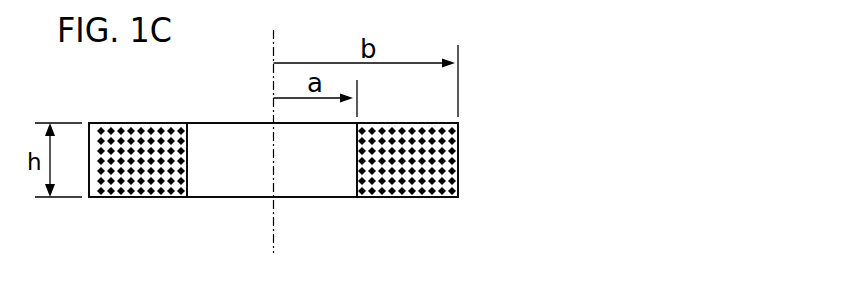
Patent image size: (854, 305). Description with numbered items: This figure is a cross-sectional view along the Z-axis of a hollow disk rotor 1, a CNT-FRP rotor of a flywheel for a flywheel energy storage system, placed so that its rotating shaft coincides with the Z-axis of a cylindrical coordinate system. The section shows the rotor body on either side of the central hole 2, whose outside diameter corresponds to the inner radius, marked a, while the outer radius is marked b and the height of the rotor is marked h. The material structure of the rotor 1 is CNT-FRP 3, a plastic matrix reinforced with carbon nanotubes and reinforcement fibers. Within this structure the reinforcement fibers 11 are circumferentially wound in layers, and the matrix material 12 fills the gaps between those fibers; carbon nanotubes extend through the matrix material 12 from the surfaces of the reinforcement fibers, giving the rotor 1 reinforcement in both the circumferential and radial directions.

The hollow disk rotor 1 is at (122, 197).
The central hole 2 is at (218, 178).
The CNT-FRP 3 is at (465, 163).
The reinforcement fibers 11 is at (423, 160).
The matrix material 12 is at (432, 177).